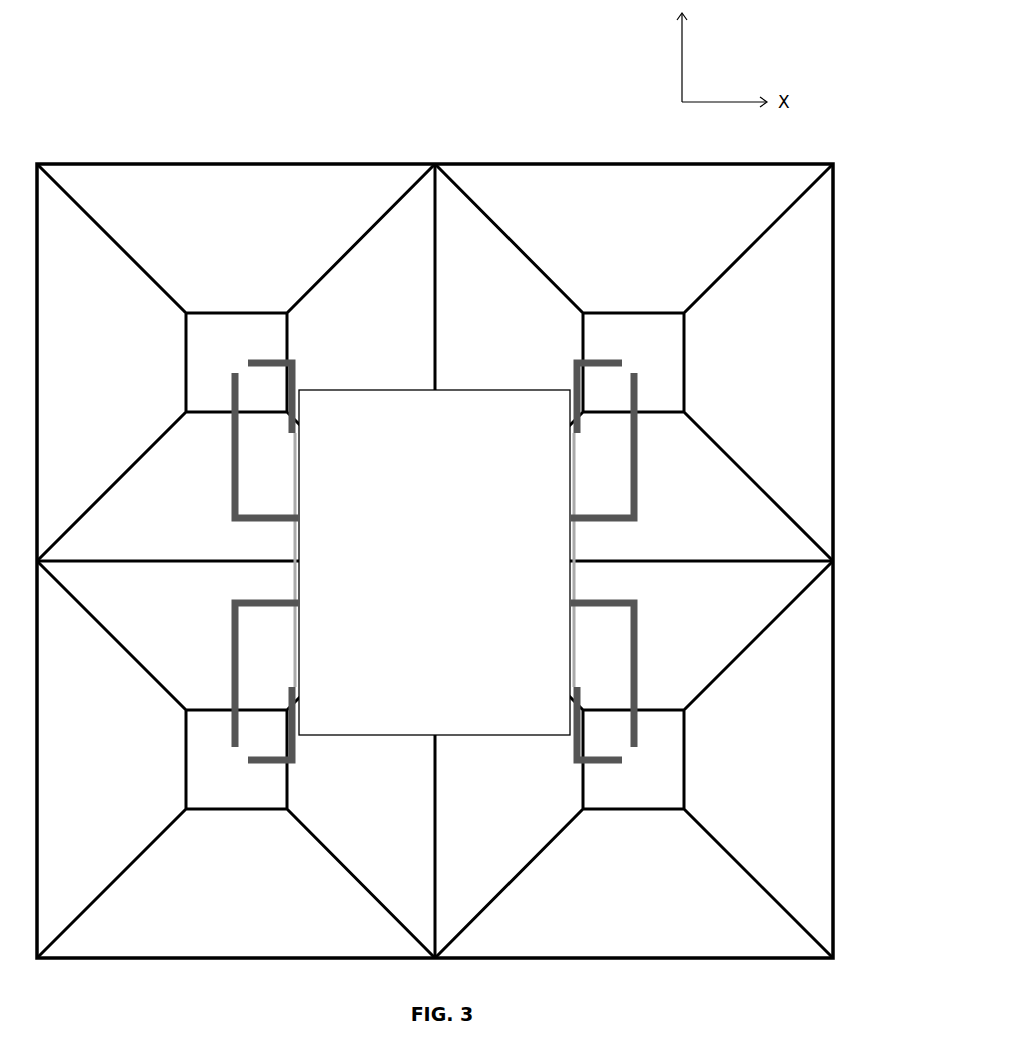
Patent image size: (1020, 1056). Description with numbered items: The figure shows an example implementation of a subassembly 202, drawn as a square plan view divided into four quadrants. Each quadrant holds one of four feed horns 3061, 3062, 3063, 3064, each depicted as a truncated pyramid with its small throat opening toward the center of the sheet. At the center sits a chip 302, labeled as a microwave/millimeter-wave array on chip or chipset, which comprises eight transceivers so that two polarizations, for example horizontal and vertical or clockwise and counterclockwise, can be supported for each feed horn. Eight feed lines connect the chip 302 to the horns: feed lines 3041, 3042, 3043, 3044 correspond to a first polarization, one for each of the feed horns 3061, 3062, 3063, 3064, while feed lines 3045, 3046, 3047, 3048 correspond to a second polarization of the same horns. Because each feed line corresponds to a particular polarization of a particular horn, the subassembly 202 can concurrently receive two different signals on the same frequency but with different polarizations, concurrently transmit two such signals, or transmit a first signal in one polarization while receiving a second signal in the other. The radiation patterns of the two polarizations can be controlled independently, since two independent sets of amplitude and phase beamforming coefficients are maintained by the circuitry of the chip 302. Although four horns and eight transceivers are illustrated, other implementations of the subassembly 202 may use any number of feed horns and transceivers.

The subassembly 202 is at (128, 83).
The chip 302 is at (434, 562).
The feed line 3041 is at (298, 379).
The feed line 3042 is at (573, 379).
The feed line 3043 is at (298, 744).
The feed line 3044 is at (573, 758).
The feed line 3045 is at (232, 497).
The feed line 3046 is at (639, 478).
The feed line 3047 is at (232, 681).
The feed line 3048 is at (642, 661).
The feed horn 3061 is at (258, 163).
The feed horn 3062 is at (528, 163).
The feed horn 3063 is at (253, 960).
The feed horn 3064 is at (635, 960).